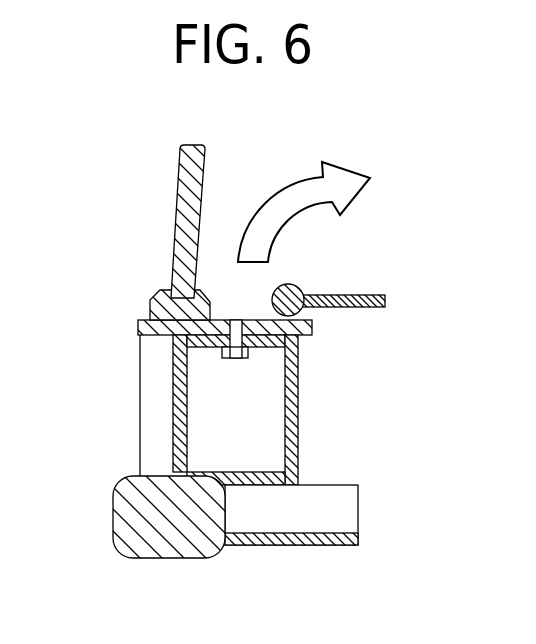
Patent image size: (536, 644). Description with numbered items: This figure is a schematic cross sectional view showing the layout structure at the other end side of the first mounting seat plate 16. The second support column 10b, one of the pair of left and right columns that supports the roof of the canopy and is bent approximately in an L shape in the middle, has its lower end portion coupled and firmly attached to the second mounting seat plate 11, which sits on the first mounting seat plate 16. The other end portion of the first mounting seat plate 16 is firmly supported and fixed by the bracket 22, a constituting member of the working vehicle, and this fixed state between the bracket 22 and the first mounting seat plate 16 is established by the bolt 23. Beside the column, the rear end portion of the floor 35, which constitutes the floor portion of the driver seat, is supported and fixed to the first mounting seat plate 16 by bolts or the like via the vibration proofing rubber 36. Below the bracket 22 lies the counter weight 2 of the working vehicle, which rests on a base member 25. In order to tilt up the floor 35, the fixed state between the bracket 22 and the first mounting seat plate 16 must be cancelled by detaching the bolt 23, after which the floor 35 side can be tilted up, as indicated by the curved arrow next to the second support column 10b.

The second support column 10b is at (176, 218).
The second mounting seat plate 11 is at (152, 300).
The first mounting seat plate 16 is at (312, 334).
The vibration proofing rubber 36 is at (300, 287).
The floor 35 is at (357, 308).
The bolt 23 is at (237, 358).
The bracket 22 is at (298, 438).
The base plate 25 is at (358, 545).
The counter weight 2 is at (120, 538).